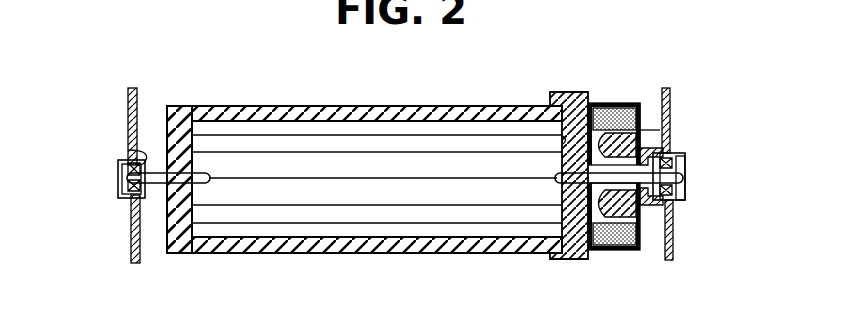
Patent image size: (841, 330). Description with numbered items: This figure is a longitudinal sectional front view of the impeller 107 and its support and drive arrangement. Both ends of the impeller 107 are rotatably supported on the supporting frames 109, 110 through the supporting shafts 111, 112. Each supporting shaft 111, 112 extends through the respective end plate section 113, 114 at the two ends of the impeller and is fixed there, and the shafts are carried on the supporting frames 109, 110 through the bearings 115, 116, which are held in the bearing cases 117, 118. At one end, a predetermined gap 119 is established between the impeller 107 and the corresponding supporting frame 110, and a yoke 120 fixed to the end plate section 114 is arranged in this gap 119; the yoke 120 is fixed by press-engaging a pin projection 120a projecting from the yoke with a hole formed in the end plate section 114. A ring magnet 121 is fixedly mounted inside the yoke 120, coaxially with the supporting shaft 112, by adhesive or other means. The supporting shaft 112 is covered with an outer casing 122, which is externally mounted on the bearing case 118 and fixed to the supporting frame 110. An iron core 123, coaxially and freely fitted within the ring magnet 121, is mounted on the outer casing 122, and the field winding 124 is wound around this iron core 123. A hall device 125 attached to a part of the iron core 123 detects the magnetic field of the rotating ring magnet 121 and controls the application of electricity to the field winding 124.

The impeller 107 is at (313, 100).
The end plate section 113 is at (176, 106).
The supporting frame 109 is at (128, 112).
The supporting shaft 111 is at (157, 183).
The bearing 115 is at (128, 150).
The bearing case 117 is at (118, 194).
The end plate section 114 is at (573, 110).
The pin projection 120a is at (563, 140).
The yoke 120 is at (607, 107).
The ring magnet 121 is at (618, 250).
The iron core 123 is at (602, 252).
The hall device 125 is at (640, 118).
The gap 119 is at (648, 118).
The outer casing 122 is at (655, 148).
The field winding 124 is at (643, 208).
The supporting frame 110 is at (670, 100).
The supporting shaft 112 is at (673, 224).
The bearing 116 is at (685, 160).
The bearing case 118 is at (687, 195).